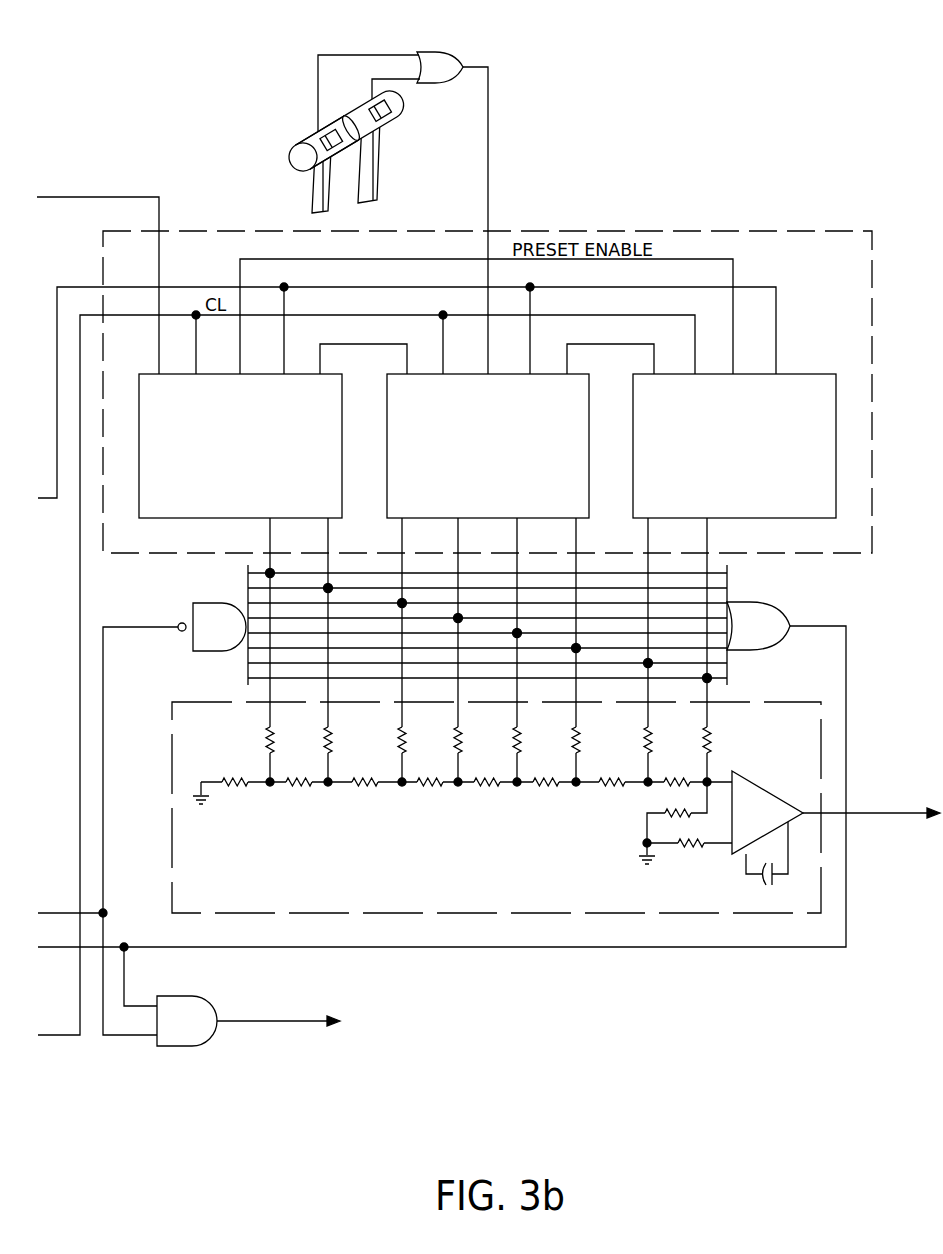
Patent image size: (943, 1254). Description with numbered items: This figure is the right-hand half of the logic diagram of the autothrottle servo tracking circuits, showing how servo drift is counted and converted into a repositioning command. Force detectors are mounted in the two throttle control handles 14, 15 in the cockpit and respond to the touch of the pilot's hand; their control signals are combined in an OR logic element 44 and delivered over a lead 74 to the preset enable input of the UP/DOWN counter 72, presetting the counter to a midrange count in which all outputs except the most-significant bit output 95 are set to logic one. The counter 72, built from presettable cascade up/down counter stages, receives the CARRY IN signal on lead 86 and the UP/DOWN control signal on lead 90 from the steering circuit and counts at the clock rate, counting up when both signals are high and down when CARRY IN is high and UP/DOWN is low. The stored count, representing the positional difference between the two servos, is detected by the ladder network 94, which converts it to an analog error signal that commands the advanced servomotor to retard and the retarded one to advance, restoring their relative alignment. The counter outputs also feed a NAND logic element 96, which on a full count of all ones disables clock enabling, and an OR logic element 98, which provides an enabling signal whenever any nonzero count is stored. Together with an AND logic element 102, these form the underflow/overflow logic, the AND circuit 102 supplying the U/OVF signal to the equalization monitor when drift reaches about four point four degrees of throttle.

The throttle control handle 14 is at (310, 205).
The throttle control handle 15 is at (380, 170).
The OR logic element 44 is at (450, 55).
The UP/DOWN counter 72 is at (380, 456).
The lead 74 is at (490, 182).
The lead 86 is at (66, 198).
The lead 90 is at (70, 287).
The ladder network 94 is at (296, 868).
The most-significant bit output 95 is at (268, 540).
The NAND logic element 96 is at (190, 605).
The OR logic element 98 is at (784, 614).
The AND logic element 102 is at (185, 996).